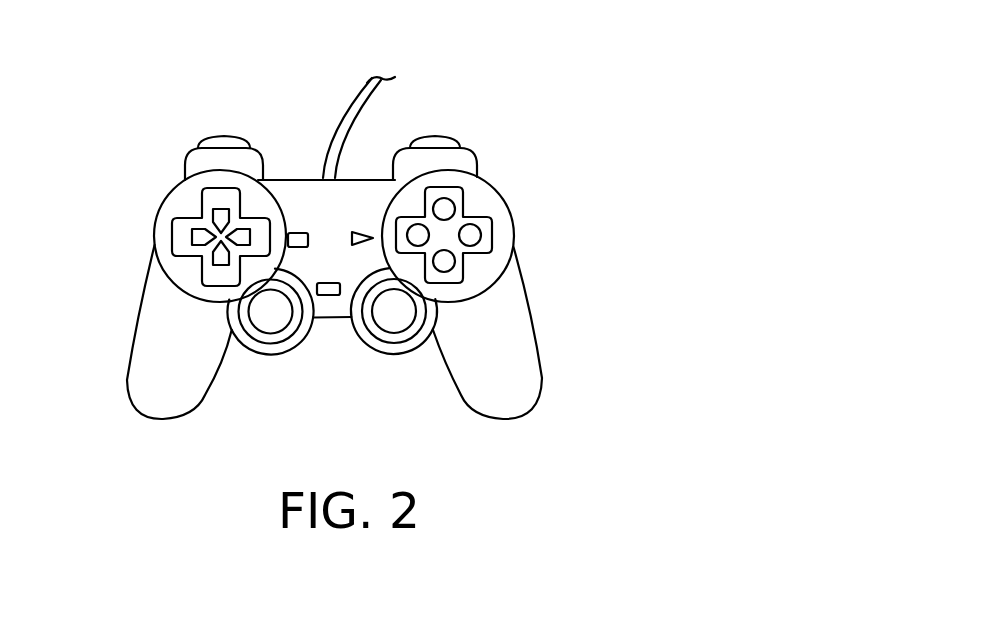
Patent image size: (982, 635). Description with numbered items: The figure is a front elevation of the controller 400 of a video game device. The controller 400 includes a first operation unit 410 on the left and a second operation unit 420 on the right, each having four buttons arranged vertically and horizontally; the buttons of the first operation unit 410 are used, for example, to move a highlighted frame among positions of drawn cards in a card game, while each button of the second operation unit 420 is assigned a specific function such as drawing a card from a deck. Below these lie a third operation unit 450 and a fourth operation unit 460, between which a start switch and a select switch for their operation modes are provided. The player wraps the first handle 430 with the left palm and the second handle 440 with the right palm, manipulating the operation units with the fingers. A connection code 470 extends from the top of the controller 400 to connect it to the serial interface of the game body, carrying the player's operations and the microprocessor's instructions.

The controller 400 is at (500, 102).
The first operation unit 410 is at (188, 212).
The second operation unit 420 is at (478, 205).
The first handle 430 is at (162, 390).
The second handle 440 is at (520, 390).
The third operation unit 450 is at (263, 337).
The fourth operation unit 460 is at (393, 337).
The connection code 470 is at (358, 114).